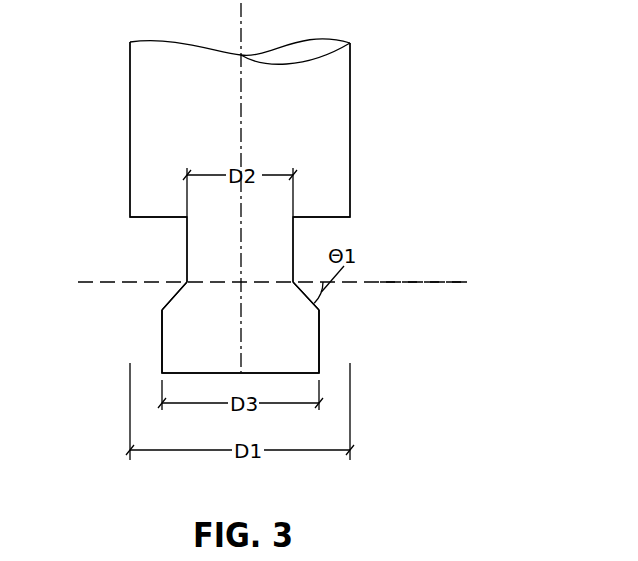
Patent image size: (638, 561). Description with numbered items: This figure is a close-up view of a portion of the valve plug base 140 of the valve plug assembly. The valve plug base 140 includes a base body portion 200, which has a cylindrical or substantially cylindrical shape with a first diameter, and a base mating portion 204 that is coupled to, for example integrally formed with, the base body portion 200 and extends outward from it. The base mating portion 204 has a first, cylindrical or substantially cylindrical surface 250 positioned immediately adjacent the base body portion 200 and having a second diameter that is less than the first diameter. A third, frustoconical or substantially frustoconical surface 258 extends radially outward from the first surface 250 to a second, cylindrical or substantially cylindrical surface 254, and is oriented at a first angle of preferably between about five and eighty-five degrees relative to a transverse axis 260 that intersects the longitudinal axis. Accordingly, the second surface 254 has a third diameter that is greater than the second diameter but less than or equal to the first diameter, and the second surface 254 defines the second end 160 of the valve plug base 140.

The valve plug base 140 is at (428, 56).
The base body portion 200 is at (351, 146).
The first surface 250 is at (187, 248).
The third surface 258 is at (173, 297).
The second surface 254 is at (162, 337).
The second end 160 is at (280, 372).
The transverse axis 260 is at (423, 282).
The base mating portion 204 is at (340, 303).